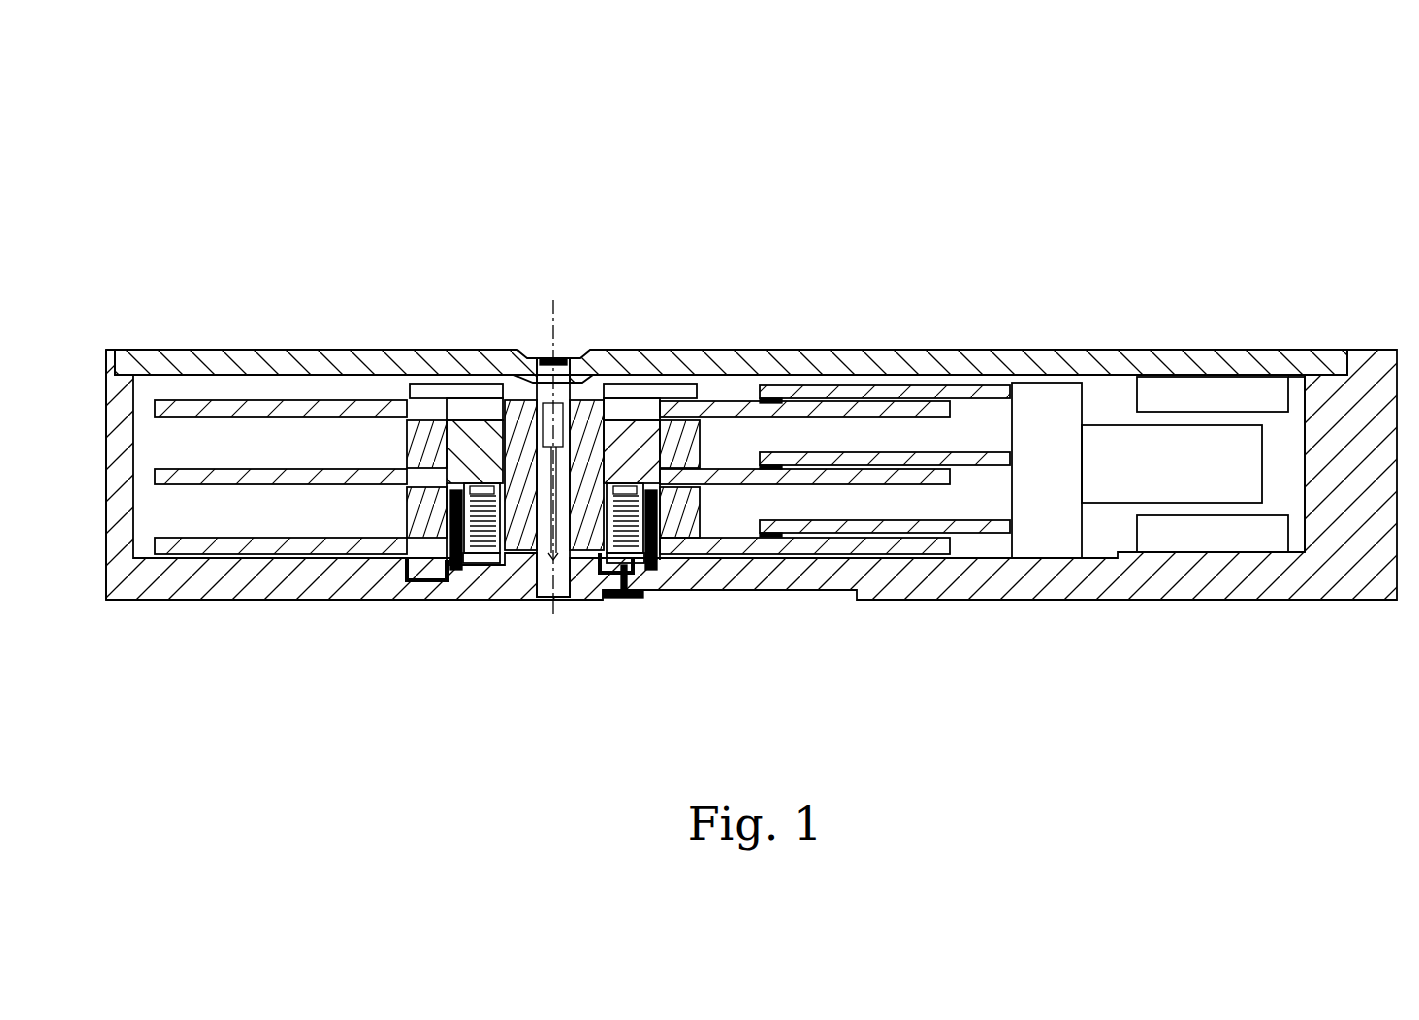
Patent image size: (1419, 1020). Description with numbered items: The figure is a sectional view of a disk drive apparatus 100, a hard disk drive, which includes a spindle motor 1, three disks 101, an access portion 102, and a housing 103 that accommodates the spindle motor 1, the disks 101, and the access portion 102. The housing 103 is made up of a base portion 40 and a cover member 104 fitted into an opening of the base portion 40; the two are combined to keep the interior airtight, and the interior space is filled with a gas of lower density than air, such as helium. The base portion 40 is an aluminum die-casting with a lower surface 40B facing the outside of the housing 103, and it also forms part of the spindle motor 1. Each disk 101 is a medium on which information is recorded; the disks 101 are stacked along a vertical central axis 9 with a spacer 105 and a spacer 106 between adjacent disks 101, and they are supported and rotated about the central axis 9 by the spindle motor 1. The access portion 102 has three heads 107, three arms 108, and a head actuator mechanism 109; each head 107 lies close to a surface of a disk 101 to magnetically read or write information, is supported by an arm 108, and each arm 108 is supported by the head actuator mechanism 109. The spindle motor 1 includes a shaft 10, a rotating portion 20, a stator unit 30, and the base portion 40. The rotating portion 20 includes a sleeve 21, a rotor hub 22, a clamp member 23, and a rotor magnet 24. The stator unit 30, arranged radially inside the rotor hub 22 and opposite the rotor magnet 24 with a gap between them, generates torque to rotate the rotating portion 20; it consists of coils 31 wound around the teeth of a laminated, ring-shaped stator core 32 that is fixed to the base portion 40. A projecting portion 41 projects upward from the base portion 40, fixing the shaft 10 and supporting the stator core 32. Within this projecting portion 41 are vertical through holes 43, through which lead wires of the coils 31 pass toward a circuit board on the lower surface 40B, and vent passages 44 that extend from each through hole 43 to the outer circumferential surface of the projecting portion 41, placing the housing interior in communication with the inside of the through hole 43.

The disk drive apparatus 100 is at (1337, 182).
The spindle motor 1 is at (708, 388).
The central axis 9 is at (565, 298).
The shaft 10 is at (517, 358).
The rotating portion 20 is at (408, 384).
The sleeve 21 is at (470, 384).
The rotor hub 22 is at (447, 436).
The clamp member 23 is at (500, 397).
The rotor magnet 24 is at (405, 572).
The stator unit 30 is at (504, 565).
The coils 31 is at (472, 578).
The stator core 32 is at (452, 575).
The base portion 40 is at (292, 592).
The lower surface 40B is at (1030, 602).
The projecting portion 41 is at (492, 578).
The through holes 43 is at (637, 597).
The vent passages 44 is at (620, 598).
The disks 101 is at (872, 548).
The access portion 102 is at (970, 402).
The housing 103 is at (186, 350).
The cover member 104 is at (258, 352).
The spacer 105 is at (407, 512).
The spacer 106 is at (407, 428).
The heads 107 is at (800, 385).
The arms 108 is at (973, 383).
The head actuator mechanism 109 is at (1063, 396).